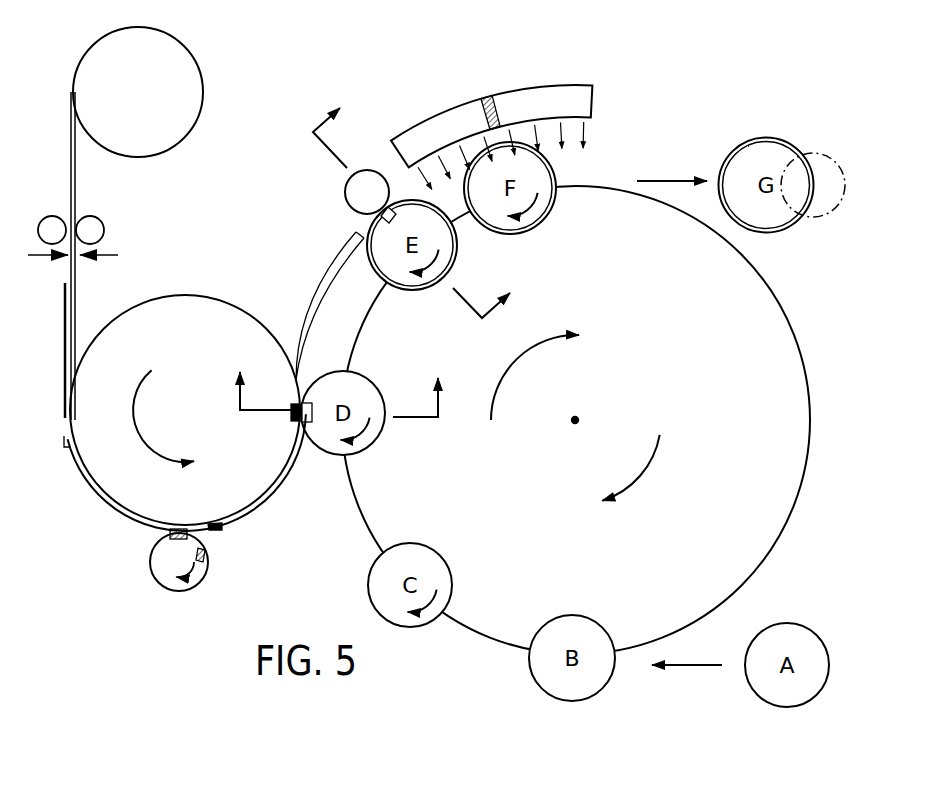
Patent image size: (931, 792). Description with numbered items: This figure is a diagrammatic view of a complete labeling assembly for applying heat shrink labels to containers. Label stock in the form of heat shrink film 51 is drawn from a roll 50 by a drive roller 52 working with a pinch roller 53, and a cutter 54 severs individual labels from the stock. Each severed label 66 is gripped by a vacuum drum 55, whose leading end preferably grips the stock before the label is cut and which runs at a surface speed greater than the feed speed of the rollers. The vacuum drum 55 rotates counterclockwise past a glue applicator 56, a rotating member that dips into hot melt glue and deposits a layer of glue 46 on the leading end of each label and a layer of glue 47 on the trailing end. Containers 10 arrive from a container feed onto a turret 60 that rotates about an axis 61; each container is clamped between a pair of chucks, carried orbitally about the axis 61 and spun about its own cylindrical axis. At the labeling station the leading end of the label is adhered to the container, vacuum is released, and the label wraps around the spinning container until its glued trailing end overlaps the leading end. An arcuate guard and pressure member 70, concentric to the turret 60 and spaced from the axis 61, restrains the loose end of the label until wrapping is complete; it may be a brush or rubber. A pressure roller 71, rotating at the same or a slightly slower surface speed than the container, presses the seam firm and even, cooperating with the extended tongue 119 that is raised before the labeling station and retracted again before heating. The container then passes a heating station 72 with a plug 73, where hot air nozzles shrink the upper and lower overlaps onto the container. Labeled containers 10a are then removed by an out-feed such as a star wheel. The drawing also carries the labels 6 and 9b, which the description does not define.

The nip between roller G and pressure roll 6 is at (810, 153).
The direction indicator 9b is at (344, 382).
The container 10 is at (780, 740).
The labeled container 10a is at (748, 146).
The layer of glue 46 is at (170, 537).
The layer of glue 47 is at (217, 532).
The roll 50 is at (176, 53).
The heat shrink film 51 is at (95, 256).
The drive roller 52 is at (93, 230).
The pinch roller 53 is at (49, 220).
The cutter 54 is at (108, 258).
The vacuum drum 55 is at (200, 392).
The glue applicator 56 is at (190, 583).
The turret 60 is at (703, 413).
The axis 61 is at (577, 417).
The severed label 66 is at (100, 494).
The arcuate guard and pressure member 70 is at (318, 300).
The pressure roller 71 is at (370, 178).
The heating station 72 is at (520, 94).
The plug 73 is at (487, 96).
The tongue 119 is at (396, 213).